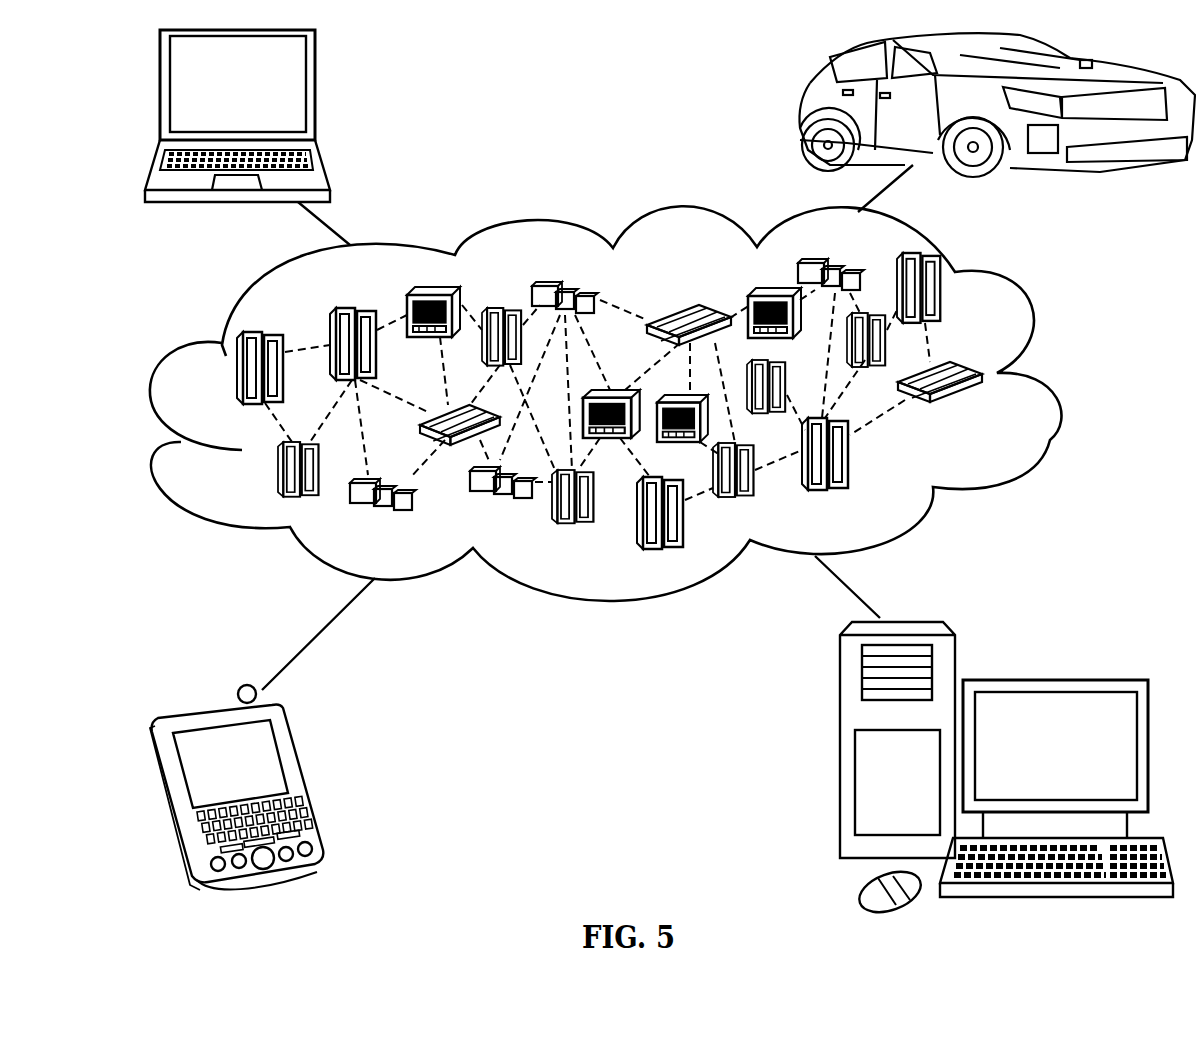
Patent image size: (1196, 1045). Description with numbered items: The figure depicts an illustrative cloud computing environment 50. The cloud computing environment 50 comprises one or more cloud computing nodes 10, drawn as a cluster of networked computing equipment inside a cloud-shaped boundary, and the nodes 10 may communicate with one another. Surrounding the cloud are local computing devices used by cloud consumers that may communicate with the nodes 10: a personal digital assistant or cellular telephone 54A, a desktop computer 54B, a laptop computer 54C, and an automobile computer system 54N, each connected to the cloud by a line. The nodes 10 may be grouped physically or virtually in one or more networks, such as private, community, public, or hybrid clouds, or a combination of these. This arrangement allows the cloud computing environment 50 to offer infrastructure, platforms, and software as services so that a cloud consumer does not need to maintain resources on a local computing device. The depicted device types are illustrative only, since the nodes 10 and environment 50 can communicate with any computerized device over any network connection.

The cloud computing node 10 is at (988, 410).
The cloud computing environment 50 is at (1057, 378).
The personal digital assistant or cellular telephone 54A is at (302, 780).
The desktop computer 54B is at (1053, 679).
The laptop computer 54C is at (316, 92).
The automobile computer system 54N is at (809, 110).